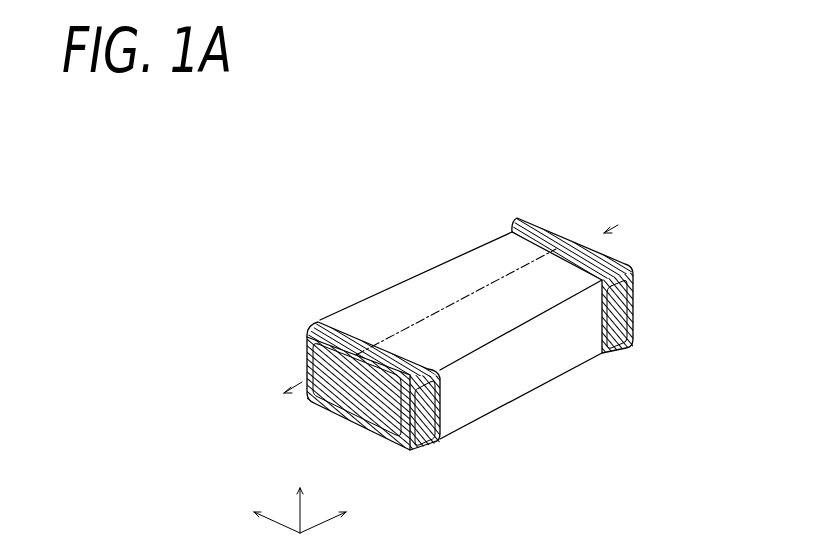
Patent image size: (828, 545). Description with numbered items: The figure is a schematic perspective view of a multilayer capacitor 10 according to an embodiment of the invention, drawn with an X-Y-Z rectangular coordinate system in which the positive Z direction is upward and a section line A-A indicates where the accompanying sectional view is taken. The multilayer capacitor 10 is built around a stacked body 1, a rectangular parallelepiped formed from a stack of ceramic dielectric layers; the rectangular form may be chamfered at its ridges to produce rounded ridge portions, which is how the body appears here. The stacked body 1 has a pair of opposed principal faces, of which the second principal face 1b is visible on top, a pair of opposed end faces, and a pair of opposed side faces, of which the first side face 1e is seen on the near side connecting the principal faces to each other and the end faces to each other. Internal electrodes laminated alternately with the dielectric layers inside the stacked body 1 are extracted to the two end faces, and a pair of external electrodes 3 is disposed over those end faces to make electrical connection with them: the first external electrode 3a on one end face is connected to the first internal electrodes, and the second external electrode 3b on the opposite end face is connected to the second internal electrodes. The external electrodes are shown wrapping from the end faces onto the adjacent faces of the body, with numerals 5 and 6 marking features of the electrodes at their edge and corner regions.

The multilayer capacitor 10 is at (604, 207).
The stacked body 1 is at (562, 355).
The second principal face 1b is at (478, 265).
The first side face 1e is at (540, 380).
The external electrodes 3 is at (377, 196).
The first external electrode 3a is at (335, 318).
The second external electrode 3b is at (510, 229).
The edge portion of external electrode 5 is at (318, 406).
The corner portion of external electrode 6 is at (310, 384).